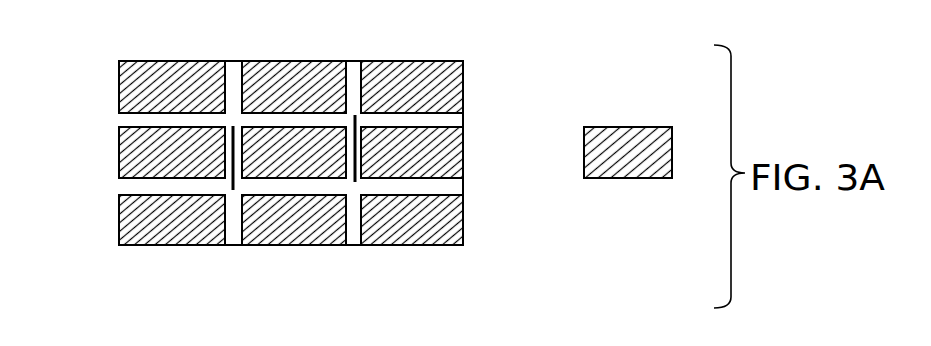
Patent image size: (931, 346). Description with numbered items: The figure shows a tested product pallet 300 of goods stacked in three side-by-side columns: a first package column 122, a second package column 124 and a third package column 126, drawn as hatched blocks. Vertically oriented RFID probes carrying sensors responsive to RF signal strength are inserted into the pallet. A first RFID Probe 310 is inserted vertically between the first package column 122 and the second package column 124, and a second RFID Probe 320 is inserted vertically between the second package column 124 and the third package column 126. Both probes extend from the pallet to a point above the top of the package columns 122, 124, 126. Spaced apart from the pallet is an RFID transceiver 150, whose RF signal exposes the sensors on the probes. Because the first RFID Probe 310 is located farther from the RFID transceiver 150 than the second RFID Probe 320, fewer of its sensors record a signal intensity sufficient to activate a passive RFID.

The tested product pallet 300 is at (80, 71).
The first RFID Probe 310 is at (232, 104).
The second RFID Probe 320 is at (357, 102).
The first package column 122 is at (117, 250).
The second package column 124 is at (239, 250).
The third package column 126 is at (358, 250).
The RFID transceiver 150 is at (584, 132).